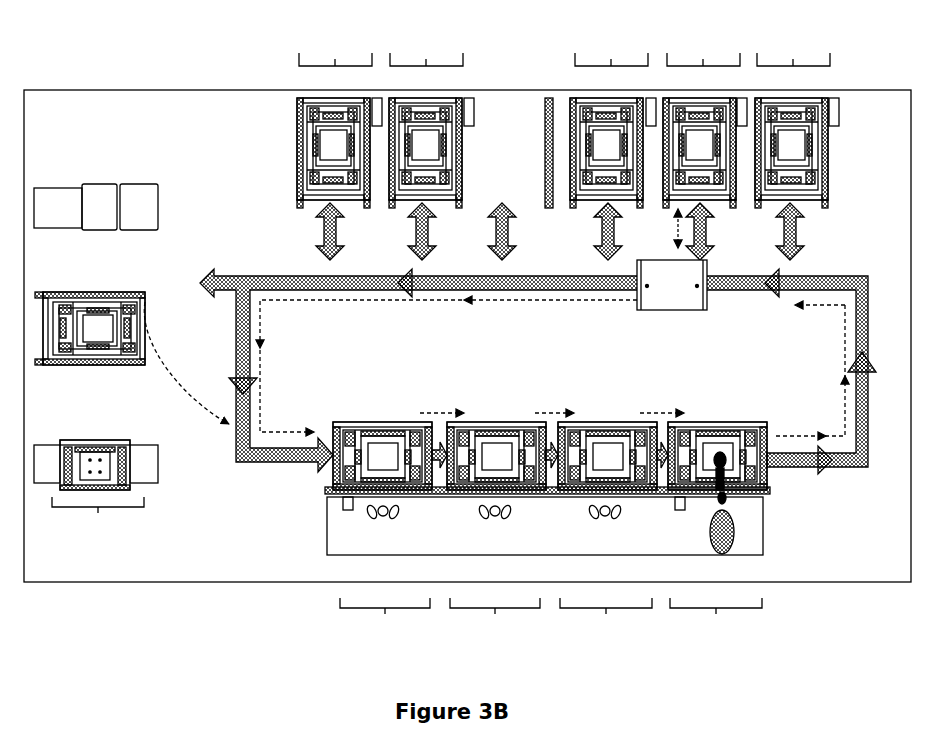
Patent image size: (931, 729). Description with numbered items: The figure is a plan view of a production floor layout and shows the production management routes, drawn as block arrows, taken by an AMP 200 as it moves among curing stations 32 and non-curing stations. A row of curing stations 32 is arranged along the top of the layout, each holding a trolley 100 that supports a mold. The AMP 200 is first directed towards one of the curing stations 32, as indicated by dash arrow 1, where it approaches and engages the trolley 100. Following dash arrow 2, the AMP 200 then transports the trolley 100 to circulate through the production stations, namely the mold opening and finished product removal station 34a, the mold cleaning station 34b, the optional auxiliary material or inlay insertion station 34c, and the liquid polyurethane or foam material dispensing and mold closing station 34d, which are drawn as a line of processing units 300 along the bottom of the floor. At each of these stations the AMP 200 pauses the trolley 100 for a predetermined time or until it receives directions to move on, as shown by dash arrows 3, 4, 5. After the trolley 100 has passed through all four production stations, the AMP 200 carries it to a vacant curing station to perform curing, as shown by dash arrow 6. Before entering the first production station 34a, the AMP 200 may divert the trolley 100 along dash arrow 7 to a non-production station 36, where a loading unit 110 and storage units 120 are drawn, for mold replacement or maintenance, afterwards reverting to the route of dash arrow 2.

The curing station 32 is at (564, 42).
The trolley 100 is at (461, 231).
The storage cassette 120 is at (118, 190).
The loading station 110 is at (96, 446).
The non-production station 36 is at (98, 521).
The AMP 200 is at (698, 298).
The processing module 300 is at (550, 426).
The mold opening and finished product removal station 34a is at (385, 622).
The mold cleaning station 34b is at (495, 622).
The auxiliary material insertion and/or inlay insertion station 34c is at (606, 622).
The liquid polyurethane or foam material dispensing and mold closing station 34d is at (716, 622).
The dash arrow 1 is at (663, 229).
The dash arrow 2 is at (446, 366).
The dash arrow 3 is at (442, 402).
The dash arrow 4 is at (554, 402).
The dash arrow 5 is at (662, 402).
The dash arrow 6 is at (812, 370).
The dash arrow 7 is at (186, 363).